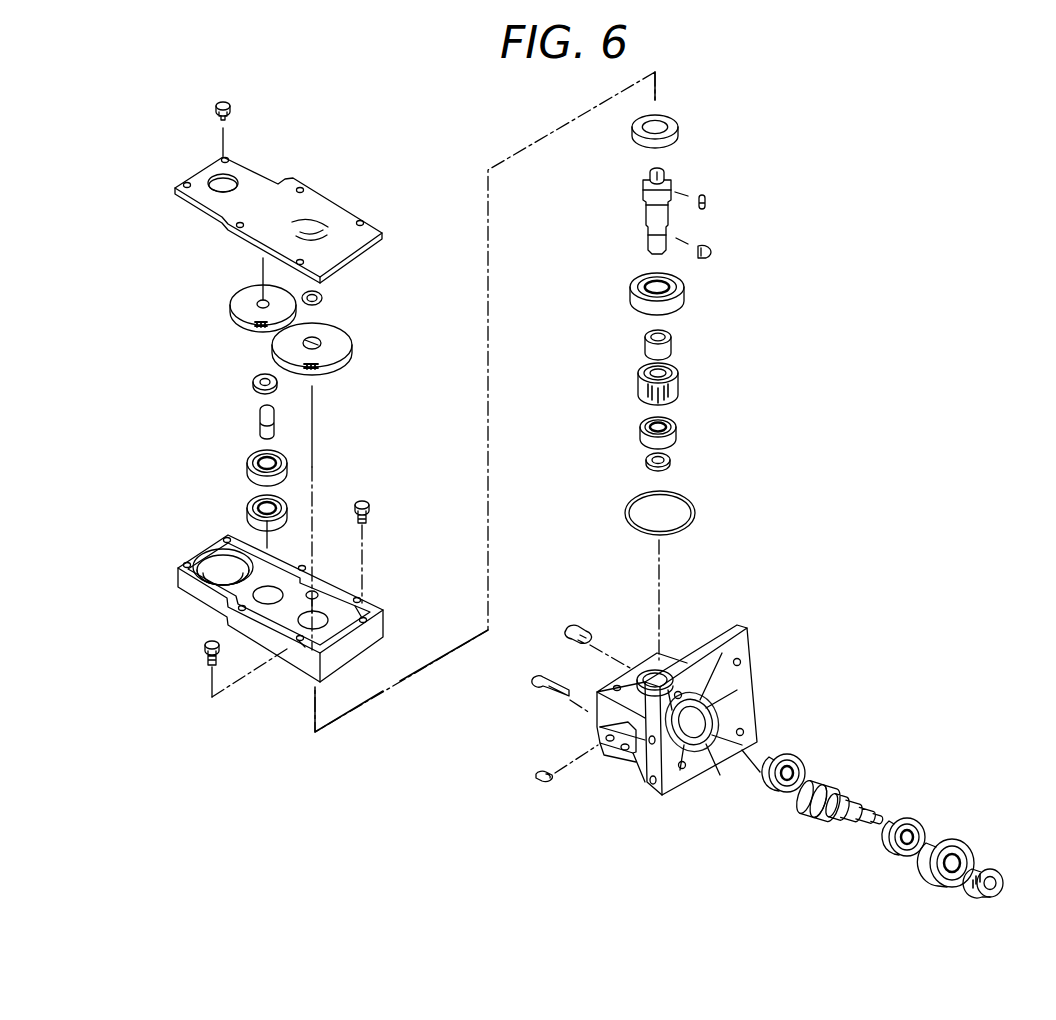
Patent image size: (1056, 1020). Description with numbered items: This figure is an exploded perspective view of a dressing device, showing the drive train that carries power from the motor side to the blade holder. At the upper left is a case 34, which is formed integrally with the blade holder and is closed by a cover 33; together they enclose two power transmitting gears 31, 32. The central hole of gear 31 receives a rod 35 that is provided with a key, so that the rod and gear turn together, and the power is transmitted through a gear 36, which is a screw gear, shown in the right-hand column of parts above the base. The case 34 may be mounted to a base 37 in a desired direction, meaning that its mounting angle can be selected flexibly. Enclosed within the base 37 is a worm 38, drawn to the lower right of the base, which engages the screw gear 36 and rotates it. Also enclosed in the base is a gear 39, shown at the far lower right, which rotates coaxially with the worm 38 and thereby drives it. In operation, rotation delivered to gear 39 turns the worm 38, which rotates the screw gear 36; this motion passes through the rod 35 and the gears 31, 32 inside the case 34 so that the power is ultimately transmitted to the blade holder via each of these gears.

The power transmitting gear 31 is at (350, 344).
The power transmitting gear 32 is at (232, 314).
The cover 33 is at (175, 190).
The case 34 is at (190, 558).
The rod 35 is at (668, 176).
The gear (screw gear) 36 is at (683, 377).
The base 37 is at (730, 632).
The worm 38 is at (862, 797).
The gear 39 is at (995, 870).